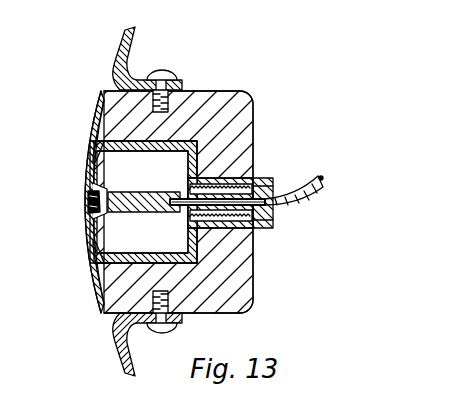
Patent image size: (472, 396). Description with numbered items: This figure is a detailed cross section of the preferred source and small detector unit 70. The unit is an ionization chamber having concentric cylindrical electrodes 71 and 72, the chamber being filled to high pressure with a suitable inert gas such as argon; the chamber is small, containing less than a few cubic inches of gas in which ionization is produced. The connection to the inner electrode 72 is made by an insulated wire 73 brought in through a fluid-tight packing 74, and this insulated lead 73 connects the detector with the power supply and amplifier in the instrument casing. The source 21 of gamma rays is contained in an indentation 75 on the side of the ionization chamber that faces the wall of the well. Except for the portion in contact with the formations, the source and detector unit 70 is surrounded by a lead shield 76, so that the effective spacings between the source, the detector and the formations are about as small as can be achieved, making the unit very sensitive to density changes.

The source and small detector unit 70 is at (262, 136).
The cylindrical electrode 71 is at (108, 140).
The cylindrical electrode 72 is at (151, 213).
The insulated wire 73 is at (308, 204).
The fluid-tight packing 74 is at (222, 230).
The indentation 75 is at (92, 196).
The lead shield 76 is at (217, 91).
The source of gamma rays 21 is at (88, 205).